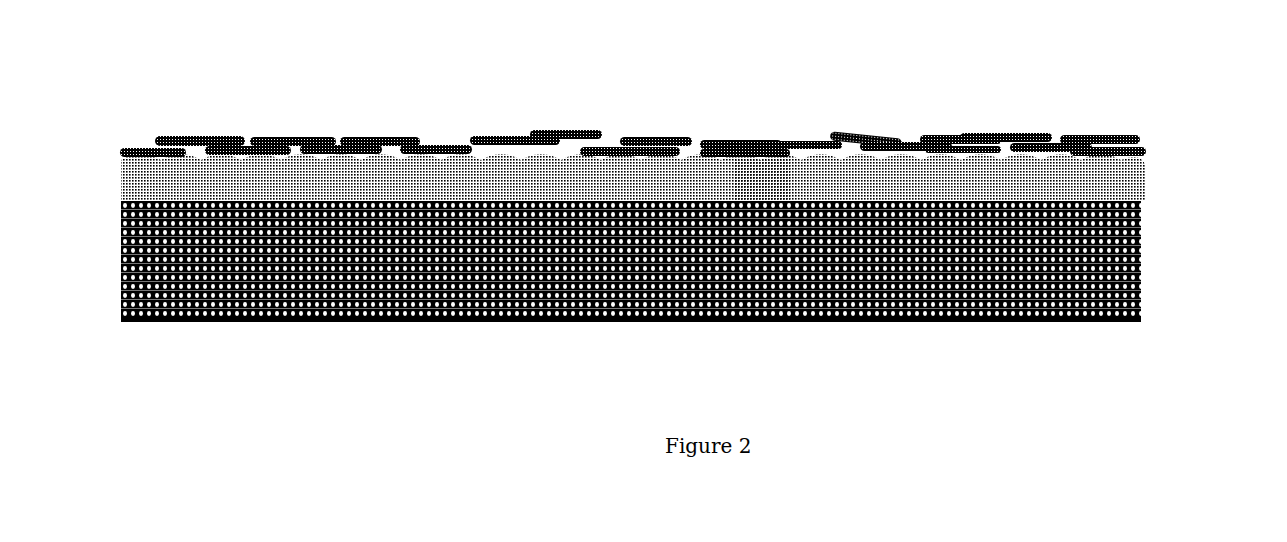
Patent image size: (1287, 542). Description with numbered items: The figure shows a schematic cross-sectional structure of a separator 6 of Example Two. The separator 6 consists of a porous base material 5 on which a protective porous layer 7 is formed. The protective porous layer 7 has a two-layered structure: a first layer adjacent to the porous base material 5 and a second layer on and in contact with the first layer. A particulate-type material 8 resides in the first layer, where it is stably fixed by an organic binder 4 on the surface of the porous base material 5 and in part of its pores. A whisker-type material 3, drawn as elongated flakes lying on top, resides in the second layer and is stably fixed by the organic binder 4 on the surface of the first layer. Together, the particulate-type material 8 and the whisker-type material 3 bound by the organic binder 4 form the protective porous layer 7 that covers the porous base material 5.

The whisker-type material 3 is at (1010, 138).
The organic binder 4 is at (643, 150).
The porous base material 5 is at (1022, 320).
The separator 6 is at (1222, 130).
The protective porous layer 7 is at (1150, 133).
The particulate-type material 8 is at (760, 167).